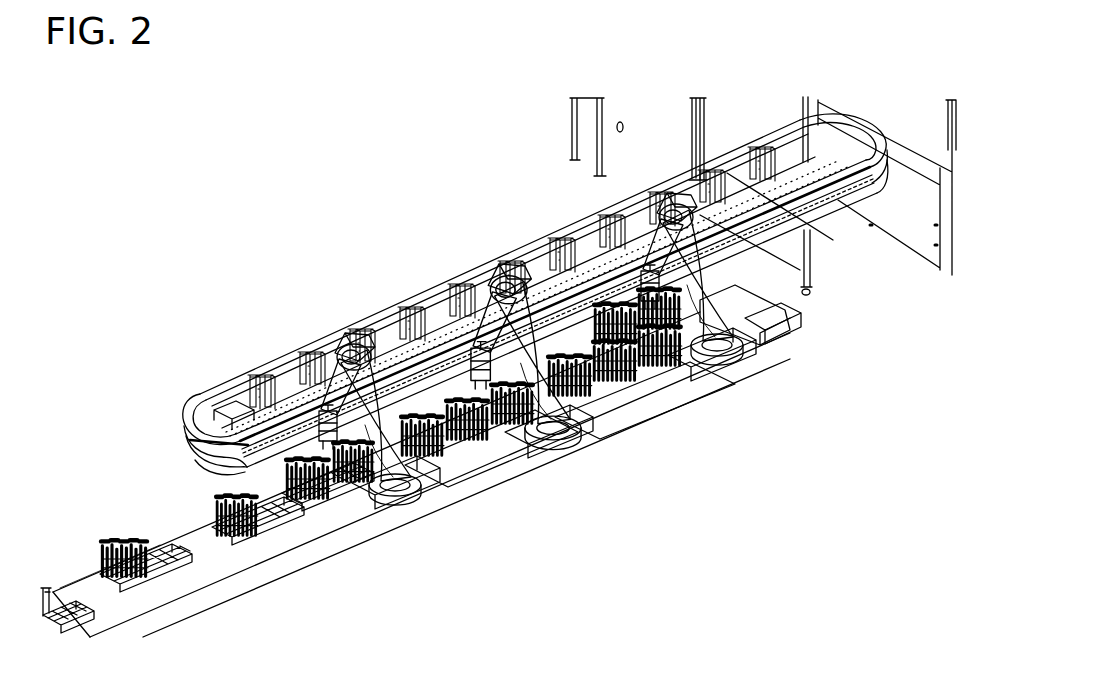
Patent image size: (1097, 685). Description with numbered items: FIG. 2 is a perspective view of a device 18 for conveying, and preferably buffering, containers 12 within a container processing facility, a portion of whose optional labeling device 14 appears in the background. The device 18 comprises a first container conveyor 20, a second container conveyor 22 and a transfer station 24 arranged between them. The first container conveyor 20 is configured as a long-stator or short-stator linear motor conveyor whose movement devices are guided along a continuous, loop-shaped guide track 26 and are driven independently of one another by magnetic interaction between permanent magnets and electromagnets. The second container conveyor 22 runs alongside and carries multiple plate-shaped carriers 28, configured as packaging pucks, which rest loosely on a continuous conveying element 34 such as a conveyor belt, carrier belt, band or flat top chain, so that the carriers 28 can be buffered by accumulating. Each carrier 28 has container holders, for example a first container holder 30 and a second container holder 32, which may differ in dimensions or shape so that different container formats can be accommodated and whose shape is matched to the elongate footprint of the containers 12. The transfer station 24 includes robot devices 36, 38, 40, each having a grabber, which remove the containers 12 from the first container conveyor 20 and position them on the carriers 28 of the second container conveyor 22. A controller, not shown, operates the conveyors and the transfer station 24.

The container 12 is at (121, 530).
The labeling device 14 is at (850, 108).
The device for conveying containers 18 is at (181, 208).
The first container conveyor 20 is at (417, 273).
The second container conveyor 22 is at (367, 547).
The transfer station 24 is at (760, 320).
The guide track 26 is at (189, 452).
The carrier 28 is at (166, 598).
The first container holder 30 is at (145, 568).
The second container holder 32 is at (166, 581).
The conveying element 34 is at (297, 530).
The robot device 36 is at (737, 332).
The robot device 38 is at (585, 397).
The robot device 40 is at (440, 465).